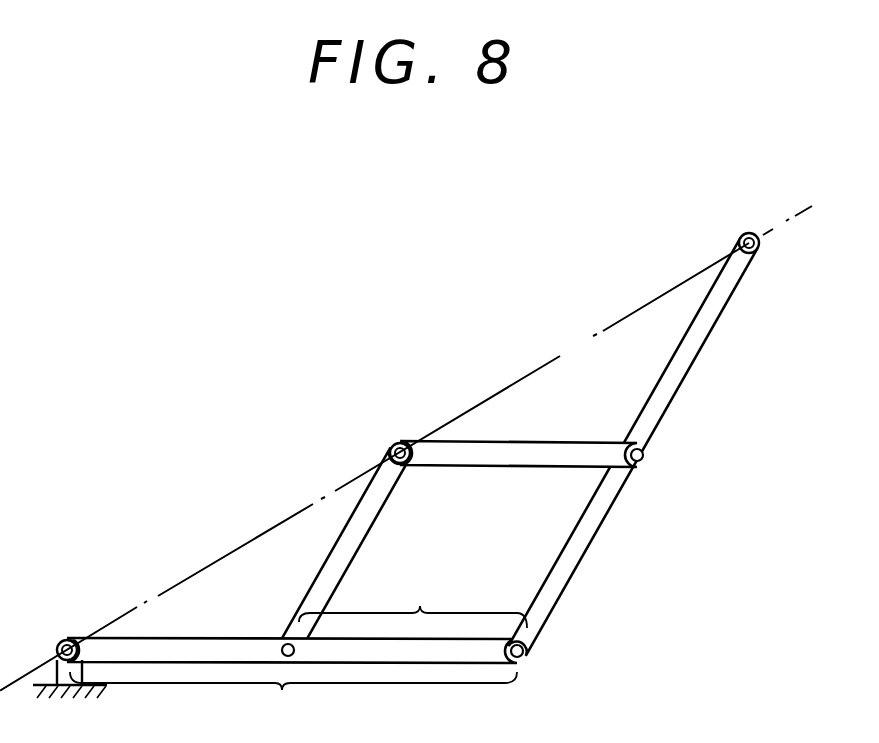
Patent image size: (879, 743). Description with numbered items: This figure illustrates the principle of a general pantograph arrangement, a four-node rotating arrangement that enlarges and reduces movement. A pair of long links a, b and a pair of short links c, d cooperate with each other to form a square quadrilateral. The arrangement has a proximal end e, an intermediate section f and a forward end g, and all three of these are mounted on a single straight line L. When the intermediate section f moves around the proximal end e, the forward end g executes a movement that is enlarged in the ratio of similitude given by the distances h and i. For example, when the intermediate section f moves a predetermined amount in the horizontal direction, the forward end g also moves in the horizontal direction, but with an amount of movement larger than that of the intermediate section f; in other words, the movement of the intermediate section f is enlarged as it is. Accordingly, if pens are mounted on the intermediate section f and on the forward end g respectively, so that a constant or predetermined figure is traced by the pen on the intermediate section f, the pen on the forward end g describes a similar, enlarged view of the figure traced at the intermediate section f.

The long link a is at (173, 637).
The long link b is at (655, 388).
The short link c is at (327, 560).
The short link d is at (500, 442).
The proximal end e is at (65, 638).
The intermediate section f is at (402, 440).
The forward end g is at (745, 233).
The distance h is at (413, 603).
The distance i is at (293, 695).
The straight line L is at (808, 207).